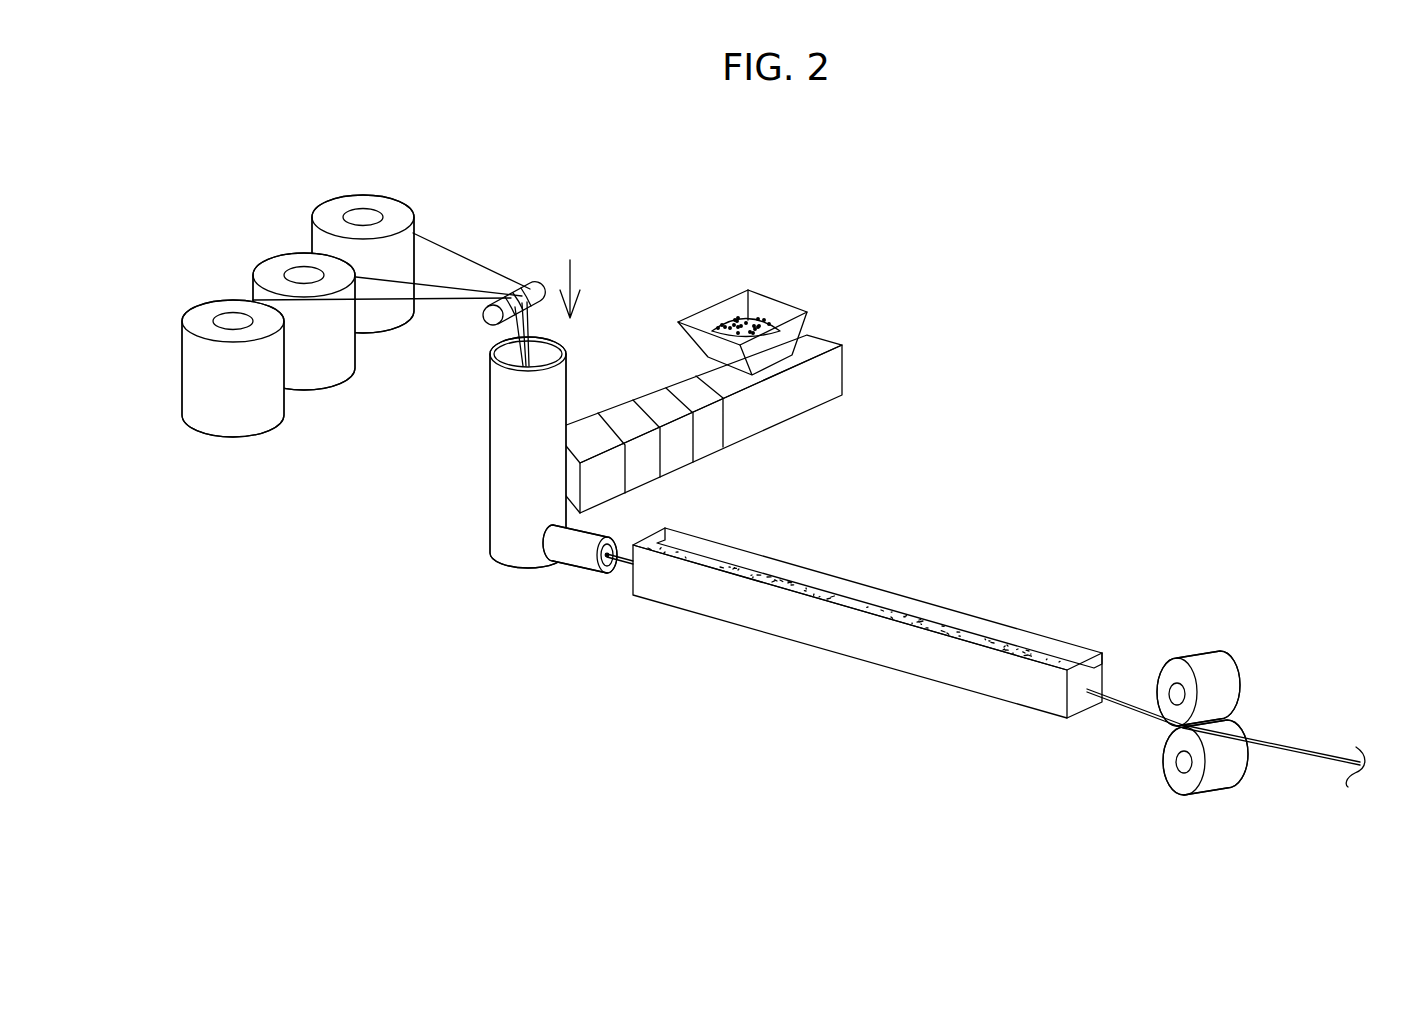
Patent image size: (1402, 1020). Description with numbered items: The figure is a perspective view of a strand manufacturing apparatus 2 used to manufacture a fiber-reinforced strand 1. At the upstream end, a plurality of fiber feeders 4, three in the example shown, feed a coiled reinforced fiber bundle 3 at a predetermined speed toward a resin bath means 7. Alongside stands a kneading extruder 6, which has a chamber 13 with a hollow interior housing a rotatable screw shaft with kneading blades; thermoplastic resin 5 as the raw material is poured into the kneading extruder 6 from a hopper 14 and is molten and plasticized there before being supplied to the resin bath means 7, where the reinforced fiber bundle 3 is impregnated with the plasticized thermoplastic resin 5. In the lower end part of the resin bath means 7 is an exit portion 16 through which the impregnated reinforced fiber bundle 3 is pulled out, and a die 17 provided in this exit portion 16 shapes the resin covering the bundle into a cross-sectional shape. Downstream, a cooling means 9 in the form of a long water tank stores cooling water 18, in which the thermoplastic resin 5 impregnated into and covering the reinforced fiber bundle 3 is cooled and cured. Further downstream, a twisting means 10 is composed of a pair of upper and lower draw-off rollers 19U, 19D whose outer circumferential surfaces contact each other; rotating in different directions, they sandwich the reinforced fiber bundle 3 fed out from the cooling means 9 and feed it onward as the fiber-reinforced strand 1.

The fiber-reinforced strand 1 is at (1312, 747).
The strand manufacturing apparatus 2 is at (907, 277).
The reinforced fiber bundle 3 is at (473, 260).
The fiber feeders 4 is at (219, 305).
The thermoplastic resin 5 is at (492, 348).
The kneading extruder 6 is at (749, 366).
The resin bath means 7 is at (488, 425).
The cooling means 9 is at (867, 624).
The twisting means 10 is at (1189, 719).
The chamber 13 is at (673, 458).
The hopper 14 is at (773, 308).
The exit portion 16 is at (560, 596).
The die 17 is at (610, 575).
The cooling water 18 is at (860, 602).
The upper draw-off roller 19U is at (1222, 672).
The lower draw-off roller 19D is at (1222, 773).